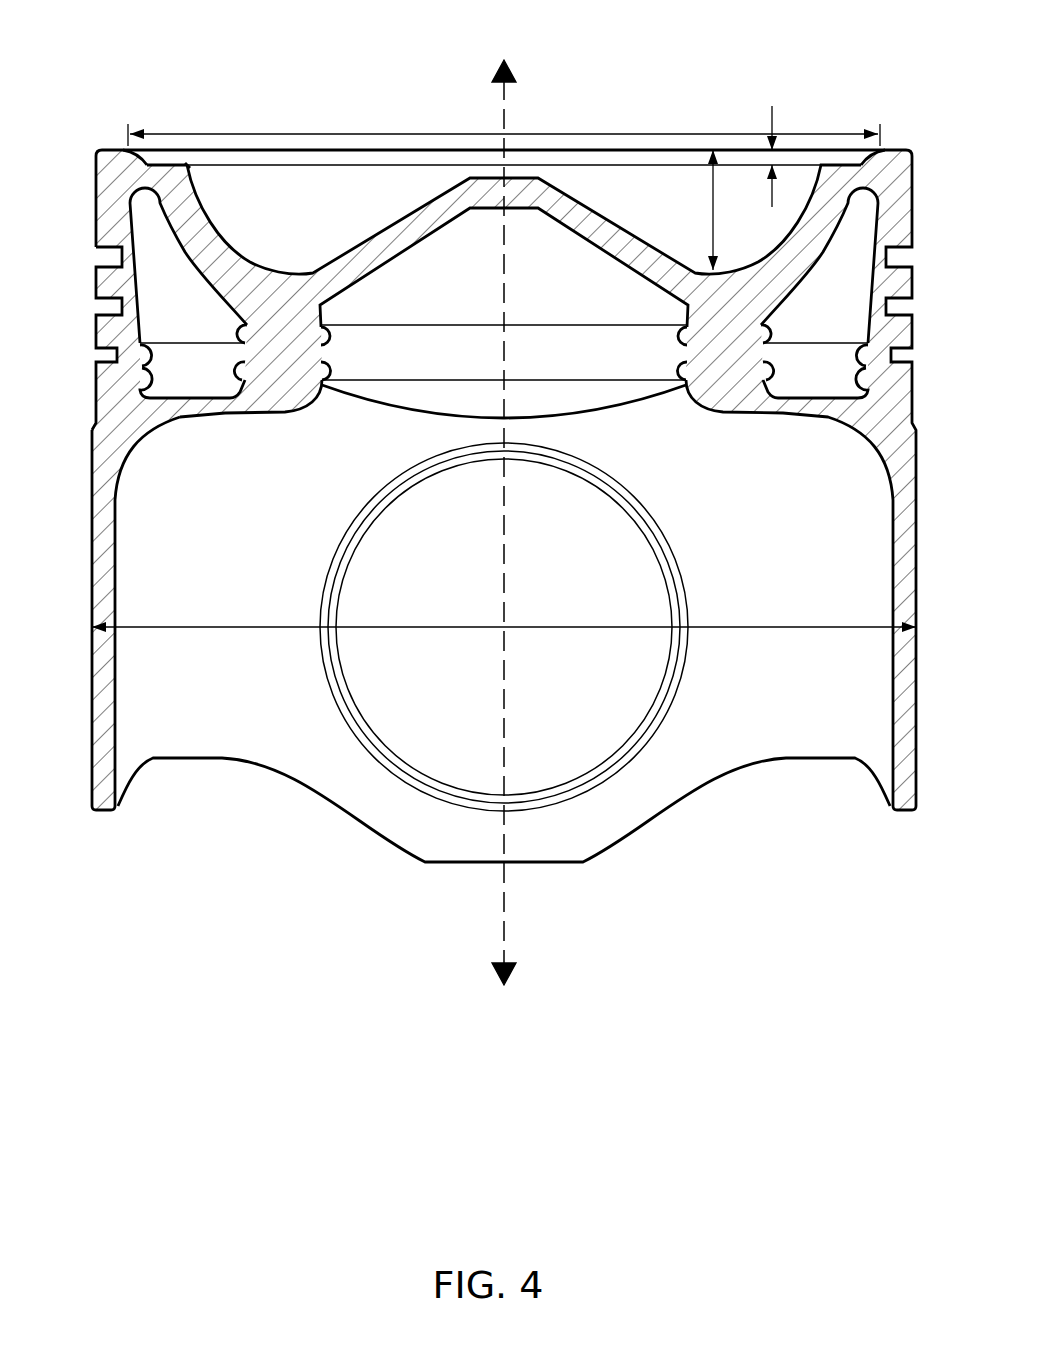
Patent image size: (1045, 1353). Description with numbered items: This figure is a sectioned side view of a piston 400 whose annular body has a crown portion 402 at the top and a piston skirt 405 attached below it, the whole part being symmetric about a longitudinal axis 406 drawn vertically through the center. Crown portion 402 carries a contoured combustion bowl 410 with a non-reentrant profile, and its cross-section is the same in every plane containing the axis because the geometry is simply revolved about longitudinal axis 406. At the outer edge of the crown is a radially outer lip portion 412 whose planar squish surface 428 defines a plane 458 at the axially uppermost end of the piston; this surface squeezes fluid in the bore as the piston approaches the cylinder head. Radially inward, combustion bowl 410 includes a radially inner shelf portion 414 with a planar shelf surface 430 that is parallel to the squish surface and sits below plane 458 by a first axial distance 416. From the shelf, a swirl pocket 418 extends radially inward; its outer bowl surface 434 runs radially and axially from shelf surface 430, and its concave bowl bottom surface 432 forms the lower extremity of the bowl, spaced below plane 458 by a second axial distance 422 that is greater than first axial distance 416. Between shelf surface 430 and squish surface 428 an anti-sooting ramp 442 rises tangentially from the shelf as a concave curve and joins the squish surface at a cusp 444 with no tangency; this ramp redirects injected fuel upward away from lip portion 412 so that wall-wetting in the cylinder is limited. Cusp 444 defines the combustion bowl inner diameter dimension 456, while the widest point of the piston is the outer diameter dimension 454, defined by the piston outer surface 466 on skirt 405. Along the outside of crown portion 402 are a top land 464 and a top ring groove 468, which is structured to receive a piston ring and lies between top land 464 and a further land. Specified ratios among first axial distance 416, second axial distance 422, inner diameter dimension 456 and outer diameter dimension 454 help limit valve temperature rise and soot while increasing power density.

The piston 400 is at (272, 40).
The crown portion 402 is at (924, 148).
The piston skirt 405 is at (105, 505).
The longitudinal axis 406 is at (514, 542).
The contoured combustion bowl 410 is at (360, 226).
The radially outer lip portion 412 is at (110, 162).
The radially inner shelf portion 414 is at (162, 176).
The first axial distance 416 is at (770, 111).
The swirl pocket 418 is at (316, 239).
The second axial distance 422 is at (712, 200).
The planar squish surface 428 is at (112, 150).
The planar shelf surface 430 is at (178, 160).
The bowl bottom surface 432 is at (328, 266).
The outer bowl surface 434 is at (197, 168).
The anti-sooting ramp 442 is at (150, 160).
The cusp 444 is at (884, 153).
The outer diameter dimension 454 is at (715, 626).
The combustion bowl inner diameter dimension 456 is at (386, 133).
The plane 458 is at (607, 150).
The top land 464 is at (103, 220).
The piston outer surface 466 is at (92, 468).
The top ring groove 468 is at (100, 262).